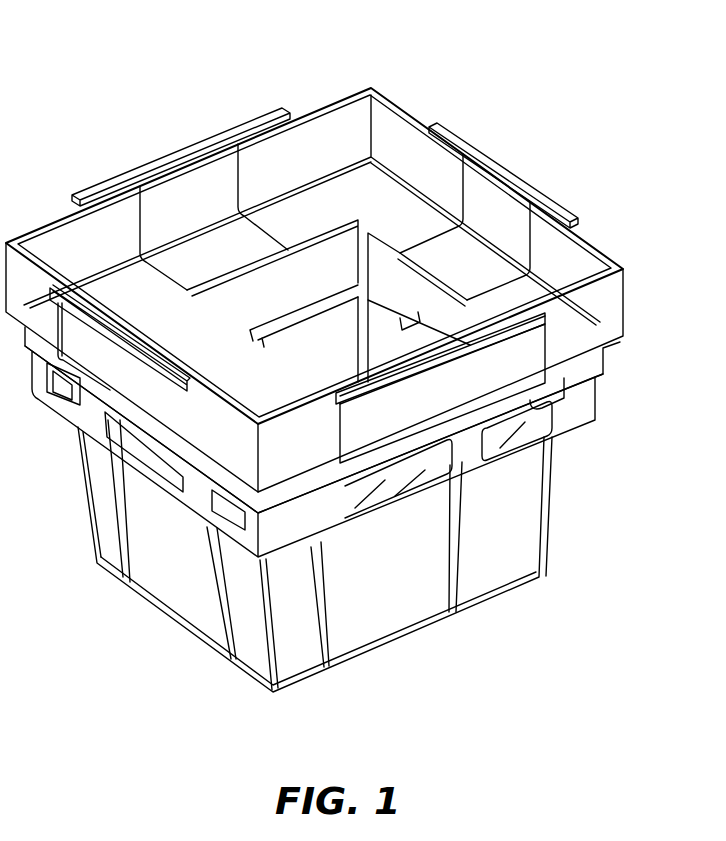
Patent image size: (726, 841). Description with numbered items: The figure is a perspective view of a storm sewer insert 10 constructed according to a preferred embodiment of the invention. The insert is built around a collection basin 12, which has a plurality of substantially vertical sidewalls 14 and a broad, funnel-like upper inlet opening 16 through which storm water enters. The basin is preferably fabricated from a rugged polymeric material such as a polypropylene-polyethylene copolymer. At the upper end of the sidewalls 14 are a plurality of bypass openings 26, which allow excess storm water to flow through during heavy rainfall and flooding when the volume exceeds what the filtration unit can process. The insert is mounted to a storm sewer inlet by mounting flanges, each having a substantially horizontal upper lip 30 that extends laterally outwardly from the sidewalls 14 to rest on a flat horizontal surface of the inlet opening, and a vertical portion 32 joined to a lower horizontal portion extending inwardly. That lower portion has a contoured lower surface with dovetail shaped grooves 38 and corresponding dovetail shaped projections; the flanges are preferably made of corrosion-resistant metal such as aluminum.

The storm sewer insert 10 is at (546, 88).
The collection basin 12 is at (367, 612).
The substantially vertical sidewalls 14 is at (162, 583).
The upper inlet opening 16 is at (258, 290).
The bypass openings 26 is at (133, 442).
The horizontal upper lip 30 is at (556, 318).
The vertical portion 32 is at (398, 434).
The dovetail shaped grooves 38 is at (510, 375).